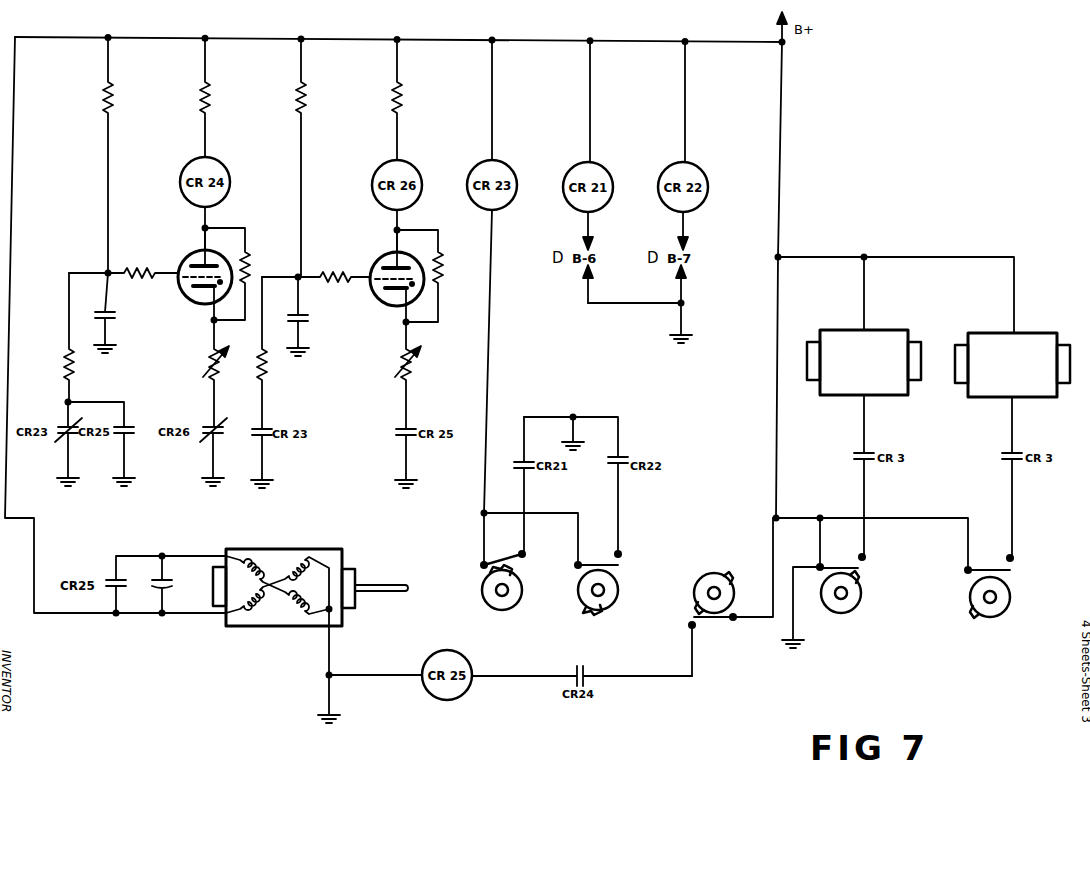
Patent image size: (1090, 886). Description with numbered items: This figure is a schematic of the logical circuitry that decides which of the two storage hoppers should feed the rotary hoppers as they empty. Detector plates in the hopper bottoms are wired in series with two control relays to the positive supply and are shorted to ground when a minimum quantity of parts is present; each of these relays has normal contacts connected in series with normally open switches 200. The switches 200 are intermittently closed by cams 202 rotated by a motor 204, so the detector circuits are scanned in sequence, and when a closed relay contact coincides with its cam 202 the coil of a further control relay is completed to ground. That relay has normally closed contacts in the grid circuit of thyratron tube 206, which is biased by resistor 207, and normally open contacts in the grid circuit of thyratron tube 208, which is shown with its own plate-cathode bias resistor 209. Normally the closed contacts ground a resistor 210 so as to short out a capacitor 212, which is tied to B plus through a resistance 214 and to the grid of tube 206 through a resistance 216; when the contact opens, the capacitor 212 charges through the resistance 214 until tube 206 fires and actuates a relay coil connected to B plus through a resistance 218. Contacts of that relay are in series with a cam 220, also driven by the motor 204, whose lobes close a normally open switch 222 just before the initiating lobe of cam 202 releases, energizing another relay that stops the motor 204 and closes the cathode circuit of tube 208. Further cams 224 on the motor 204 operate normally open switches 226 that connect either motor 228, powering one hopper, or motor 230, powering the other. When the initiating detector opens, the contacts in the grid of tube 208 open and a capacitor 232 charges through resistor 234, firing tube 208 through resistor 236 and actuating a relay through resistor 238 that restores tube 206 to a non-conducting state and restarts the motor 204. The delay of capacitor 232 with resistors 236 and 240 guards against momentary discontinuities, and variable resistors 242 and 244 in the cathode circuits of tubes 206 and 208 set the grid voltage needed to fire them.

The normally open switches 200 is at (528, 552).
The cams 202 is at (512, 607).
The motor 204 is at (330, 549).
The thyratron tube 206 is at (178, 290).
The resistor 207 is at (252, 258).
The thyratron tube 208 is at (370, 292).
The resistor 209 is at (445, 260).
The resistor 210 is at (72, 372).
The capacitor 212 is at (113, 322).
The resistance 214 is at (114, 91).
The resistance 216 is at (135, 267).
The resistance 218 is at (211, 91).
The cam 220 is at (718, 572).
The normally open switch 222 is at (698, 628).
The cams 224 is at (855, 608).
The normally open switches 226 is at (868, 555).
The motor 228 is at (888, 326).
The motor 230 is at (1035, 328).
The capacitor 232 is at (304, 325).
The resistor 234 is at (307, 91).
The resistor 236 is at (333, 270).
The resistor 238 is at (403, 91).
The resistor 240 is at (268, 377).
The variable resistor 242 is at (216, 378).
The variable resistor 244 is at (410, 378).